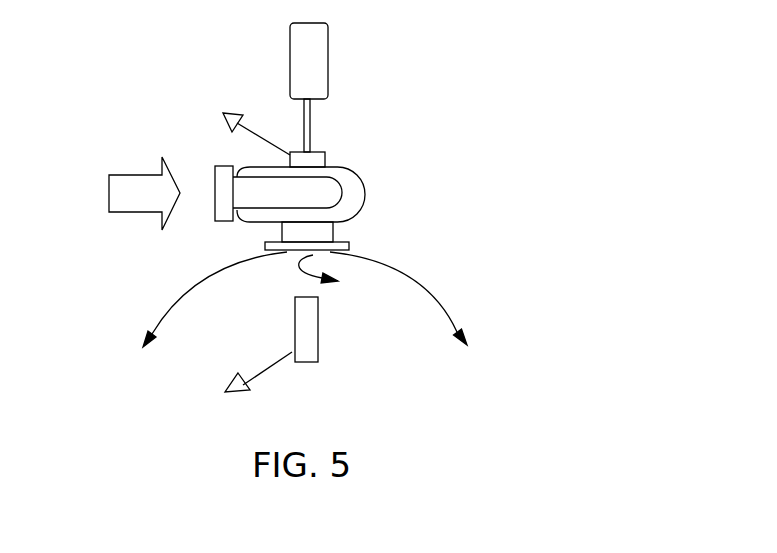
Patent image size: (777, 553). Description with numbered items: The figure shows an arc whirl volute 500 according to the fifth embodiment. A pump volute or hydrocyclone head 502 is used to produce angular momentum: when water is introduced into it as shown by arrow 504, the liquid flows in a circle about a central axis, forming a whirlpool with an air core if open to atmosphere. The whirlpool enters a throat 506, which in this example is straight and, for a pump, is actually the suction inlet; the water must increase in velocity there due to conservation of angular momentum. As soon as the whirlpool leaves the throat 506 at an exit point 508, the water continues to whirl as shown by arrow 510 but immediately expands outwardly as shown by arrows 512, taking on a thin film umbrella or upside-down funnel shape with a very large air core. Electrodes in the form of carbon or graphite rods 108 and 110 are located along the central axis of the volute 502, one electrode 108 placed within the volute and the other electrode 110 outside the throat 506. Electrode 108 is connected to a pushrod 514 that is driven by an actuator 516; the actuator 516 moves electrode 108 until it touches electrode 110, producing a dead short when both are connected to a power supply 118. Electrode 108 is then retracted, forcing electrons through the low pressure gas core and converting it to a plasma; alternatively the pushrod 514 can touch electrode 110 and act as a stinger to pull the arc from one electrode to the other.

The arc whirl volute 500 is at (460, 77).
The pump volute or hydrocyclone head 502 is at (352, 193).
The arrow 504 is at (108, 190).
The throat 506 is at (335, 232).
The exit point 508 is at (288, 253).
The arrow 510 is at (341, 276).
The arrows 512 is at (304, 316).
The pushrod 514 is at (310, 120).
The actuator 516 is at (328, 43).
The electrode 108 is at (325, 157).
The electrode 110 is at (302, 363).
The power supply 118 is at (186, 261).